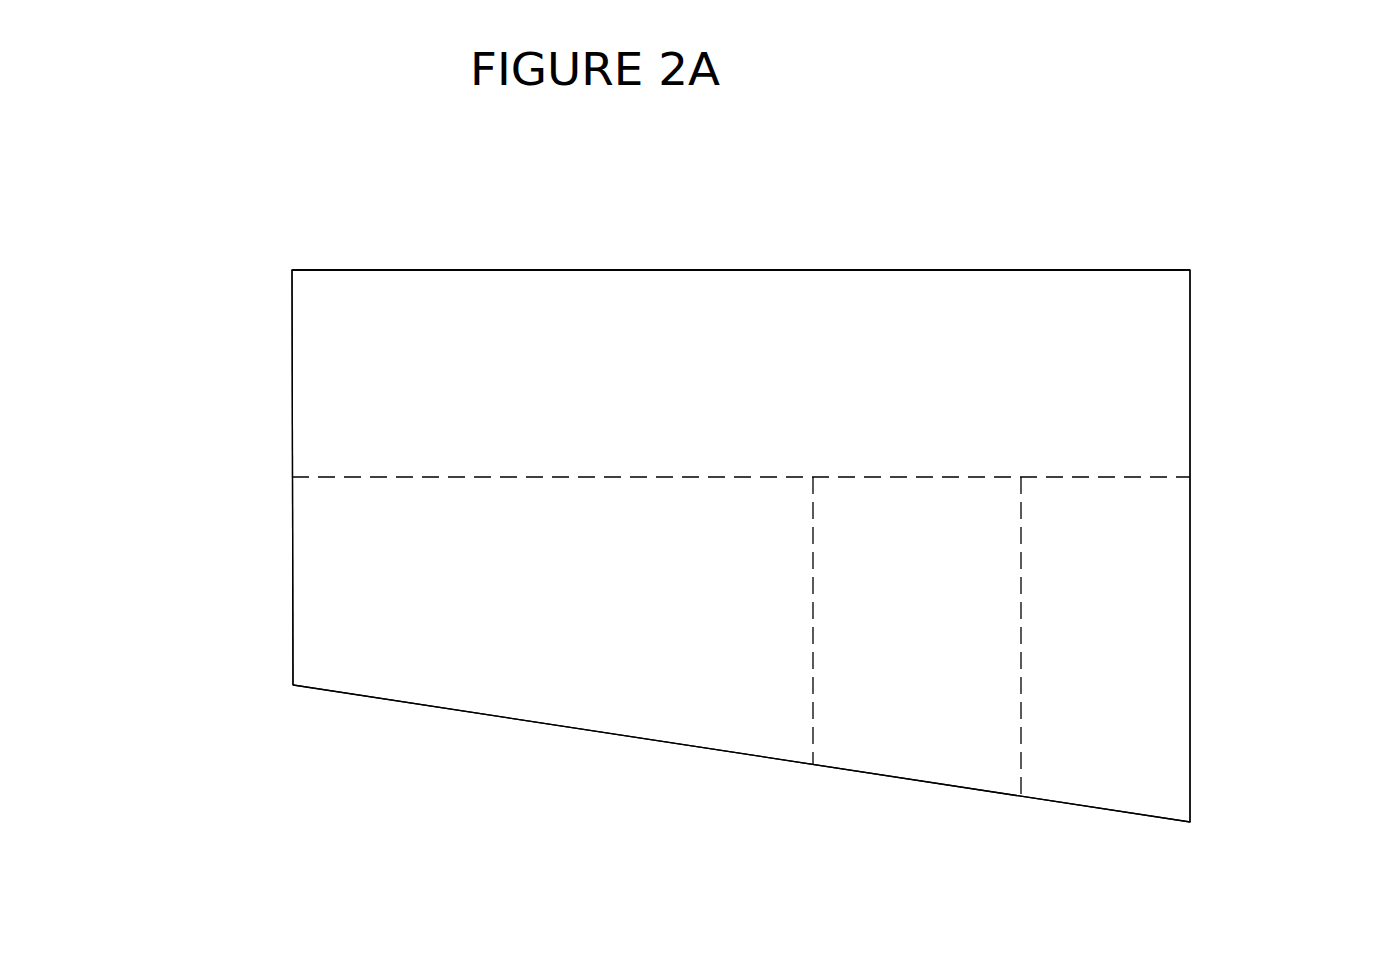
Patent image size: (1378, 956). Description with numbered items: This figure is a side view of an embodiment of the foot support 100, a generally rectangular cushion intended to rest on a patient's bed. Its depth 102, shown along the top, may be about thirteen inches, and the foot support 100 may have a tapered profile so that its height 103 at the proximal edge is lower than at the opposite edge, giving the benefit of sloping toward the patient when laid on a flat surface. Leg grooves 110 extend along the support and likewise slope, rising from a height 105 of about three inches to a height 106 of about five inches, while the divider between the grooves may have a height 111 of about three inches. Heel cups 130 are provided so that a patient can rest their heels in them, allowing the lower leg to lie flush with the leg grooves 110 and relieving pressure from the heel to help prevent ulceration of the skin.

The foot support 100 is at (743, 434).
The depth 102 is at (695, 184).
The height 103 is at (179, 477).
The height 105 is at (335, 579).
The height 106 is at (1276, 546).
The leg grooves 110 is at (741, 426).
The height 111 is at (693, 365).
The heel cups 130 is at (936, 591).